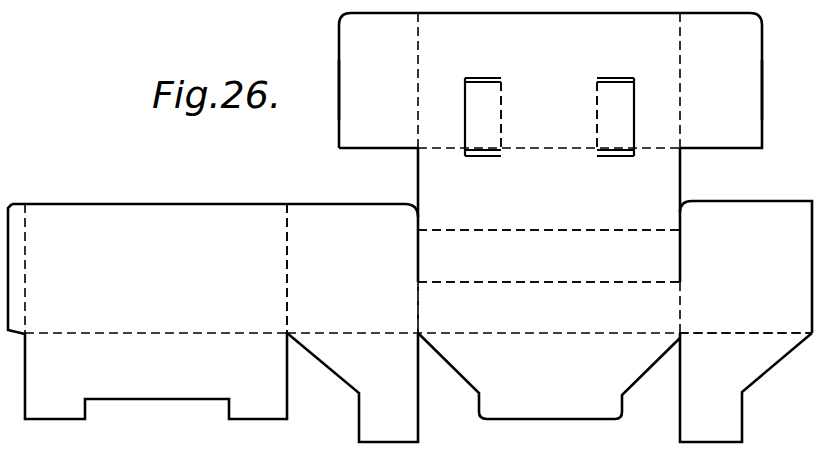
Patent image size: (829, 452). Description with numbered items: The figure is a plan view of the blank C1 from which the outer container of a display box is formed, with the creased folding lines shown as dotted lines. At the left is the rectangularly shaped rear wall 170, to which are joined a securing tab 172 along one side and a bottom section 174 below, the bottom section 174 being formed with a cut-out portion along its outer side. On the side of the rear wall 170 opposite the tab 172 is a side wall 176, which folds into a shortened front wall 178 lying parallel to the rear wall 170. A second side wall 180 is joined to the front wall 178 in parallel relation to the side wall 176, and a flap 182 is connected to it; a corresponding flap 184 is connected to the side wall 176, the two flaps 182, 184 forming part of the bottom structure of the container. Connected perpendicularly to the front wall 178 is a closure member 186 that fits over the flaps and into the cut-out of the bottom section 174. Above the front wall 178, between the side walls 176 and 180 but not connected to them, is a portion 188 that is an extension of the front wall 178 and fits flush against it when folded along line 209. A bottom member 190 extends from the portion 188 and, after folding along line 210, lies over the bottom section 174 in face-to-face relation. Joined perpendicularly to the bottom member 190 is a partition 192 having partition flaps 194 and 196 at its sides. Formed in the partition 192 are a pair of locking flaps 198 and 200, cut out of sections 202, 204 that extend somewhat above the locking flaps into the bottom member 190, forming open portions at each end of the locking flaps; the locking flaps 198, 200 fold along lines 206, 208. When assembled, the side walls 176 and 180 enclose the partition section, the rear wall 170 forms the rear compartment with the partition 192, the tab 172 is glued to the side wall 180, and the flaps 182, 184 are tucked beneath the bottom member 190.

The rear wall 170 is at (144, 212).
The securing tab 172 is at (16, 205).
The bottom section 174 is at (160, 378).
The side wall 176 is at (319, 211).
The front wall 178 is at (549, 307).
The second side wall 180 is at (748, 206).
The flap 182 is at (763, 356).
The flap 184 is at (364, 375).
The closure member 186 is at (486, 378).
The portion 188 is at (549, 263).
The bottom member 190 is at (421, 178).
The partition 192 is at (550, 80).
The partition flap 194 is at (341, 38).
The partition flap 196 is at (760, 53).
The locking flap 198 is at (468, 108).
The locking flap 200 is at (626, 113).
The section 202 is at (486, 63).
The section 204 is at (630, 63).
The line 206 is at (502, 118).
The line 208 is at (597, 115).
The line 209 is at (490, 280).
The line 210 is at (586, 229).
The blank C1 is at (205, 198).